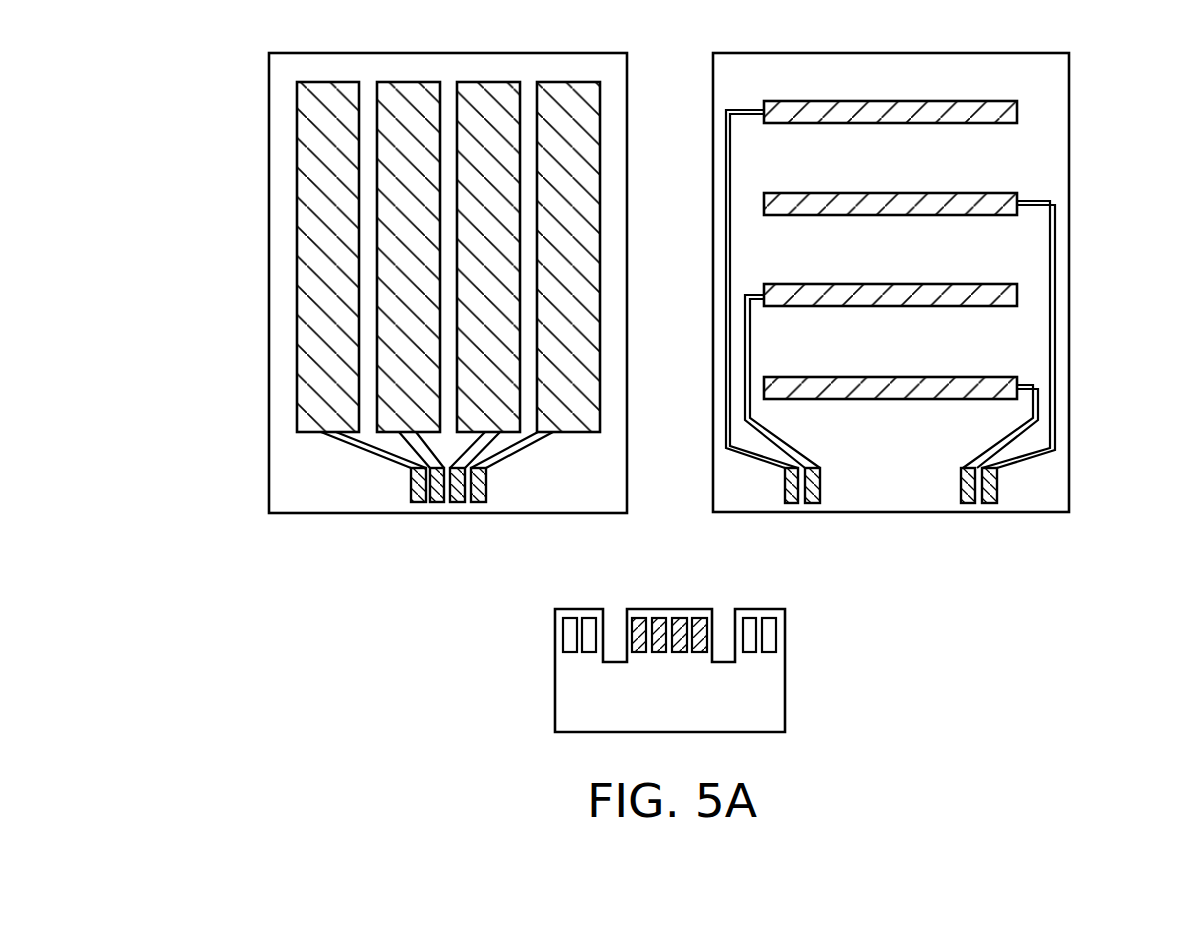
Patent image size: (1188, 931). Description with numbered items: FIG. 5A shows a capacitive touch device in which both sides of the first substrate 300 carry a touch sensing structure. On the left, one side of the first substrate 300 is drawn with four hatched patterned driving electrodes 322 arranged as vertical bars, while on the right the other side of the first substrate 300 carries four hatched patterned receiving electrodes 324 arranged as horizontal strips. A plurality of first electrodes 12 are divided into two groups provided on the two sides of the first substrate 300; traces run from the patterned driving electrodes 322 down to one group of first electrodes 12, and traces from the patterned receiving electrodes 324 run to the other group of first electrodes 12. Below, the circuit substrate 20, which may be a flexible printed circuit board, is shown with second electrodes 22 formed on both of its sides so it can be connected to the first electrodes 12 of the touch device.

The first substrate 300 is at (293, 497).
The patterned driving electrodes 322 is at (303, 243).
The patterned receiving electrodes 324 is at (1017, 110).
The first electrodes 12 is at (420, 502).
The second electrodes 22 is at (569, 618).
The circuit substrate 20 is at (772, 712).